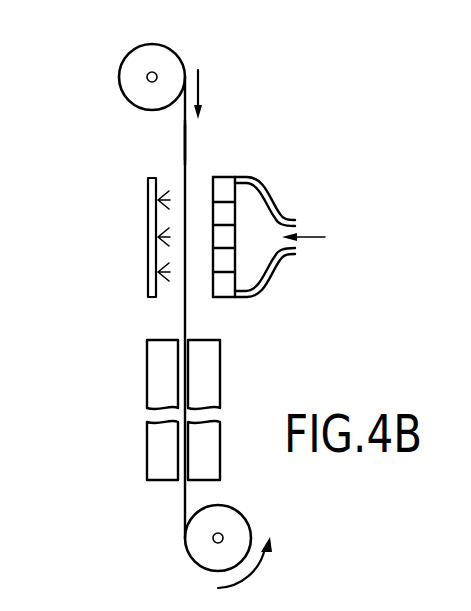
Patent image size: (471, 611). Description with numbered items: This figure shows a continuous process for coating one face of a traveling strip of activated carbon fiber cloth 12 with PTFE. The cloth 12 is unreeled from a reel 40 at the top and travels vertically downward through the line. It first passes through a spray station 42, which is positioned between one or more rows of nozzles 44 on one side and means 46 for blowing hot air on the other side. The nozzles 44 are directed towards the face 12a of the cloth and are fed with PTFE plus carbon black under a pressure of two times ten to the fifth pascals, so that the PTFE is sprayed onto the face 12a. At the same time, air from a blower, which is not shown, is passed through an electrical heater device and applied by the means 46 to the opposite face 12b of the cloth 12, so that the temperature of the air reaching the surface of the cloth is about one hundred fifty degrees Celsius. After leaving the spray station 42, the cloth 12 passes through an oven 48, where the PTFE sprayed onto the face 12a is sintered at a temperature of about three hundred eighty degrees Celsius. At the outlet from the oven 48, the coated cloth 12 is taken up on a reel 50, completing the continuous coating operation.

The cloth 12 is at (181, 52).
The face of the cloth 12a is at (172, 143).
The face of the cloth 12b is at (203, 150).
The reel 40 is at (121, 73).
The spray station 42 is at (127, 218).
The nozzles 44 is at (162, 252).
The means for blowing hot air 46 is at (281, 281).
The oven 48 is at (157, 372).
The reel 50 is at (200, 561).